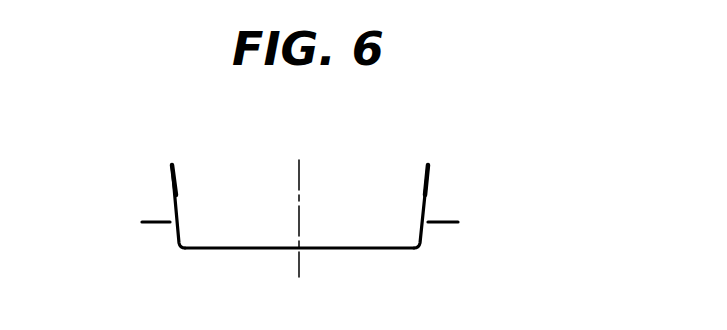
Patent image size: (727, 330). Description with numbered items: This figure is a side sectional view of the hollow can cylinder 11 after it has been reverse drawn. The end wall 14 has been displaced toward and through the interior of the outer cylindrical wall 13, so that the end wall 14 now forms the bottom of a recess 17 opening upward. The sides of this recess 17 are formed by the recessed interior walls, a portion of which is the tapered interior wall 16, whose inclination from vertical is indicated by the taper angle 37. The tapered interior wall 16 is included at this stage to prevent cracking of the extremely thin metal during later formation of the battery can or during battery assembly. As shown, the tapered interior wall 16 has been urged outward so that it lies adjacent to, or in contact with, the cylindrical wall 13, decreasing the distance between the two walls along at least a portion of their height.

The can cylinder 11 is at (330, 205).
The cylindrical wall 13 is at (170, 197).
The end wall 14 is at (337, 250).
The tapered interior wall 16 is at (176, 178).
The recess 17 is at (238, 170).
The taper angle 37 is at (422, 168).